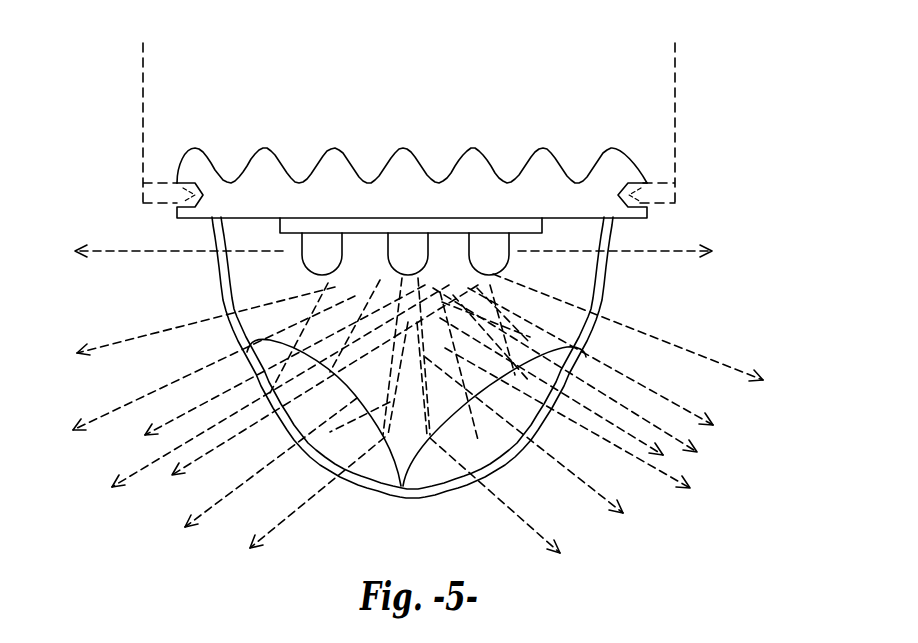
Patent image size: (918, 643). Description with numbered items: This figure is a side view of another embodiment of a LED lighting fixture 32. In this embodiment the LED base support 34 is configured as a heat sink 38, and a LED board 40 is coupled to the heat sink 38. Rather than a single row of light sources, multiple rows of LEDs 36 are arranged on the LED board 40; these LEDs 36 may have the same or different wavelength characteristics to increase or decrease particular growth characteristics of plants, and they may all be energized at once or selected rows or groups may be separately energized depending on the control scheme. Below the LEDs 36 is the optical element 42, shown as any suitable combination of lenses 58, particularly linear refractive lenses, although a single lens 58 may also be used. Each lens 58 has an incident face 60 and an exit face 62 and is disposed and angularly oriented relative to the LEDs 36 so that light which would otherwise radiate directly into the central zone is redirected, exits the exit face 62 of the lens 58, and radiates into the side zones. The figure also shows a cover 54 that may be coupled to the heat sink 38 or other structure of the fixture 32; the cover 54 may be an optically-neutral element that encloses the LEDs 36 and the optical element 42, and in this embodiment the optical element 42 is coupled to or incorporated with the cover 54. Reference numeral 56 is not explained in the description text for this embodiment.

The LED lighting fixture 32 is at (740, 98).
The LED base support 34 is at (412, 133).
The LEDs 36 is at (410, 248).
The heat sink 38 is at (335, 165).
The LED board 40 is at (502, 225).
The optical element 42 is at (433, 468).
The cover 54 is at (439, 378).
The inner surface of lens 56 is at (580, 330).
The lens 58 is at (416, 439).
The incident face 60 is at (342, 386).
The exit face 62 is at (297, 435).